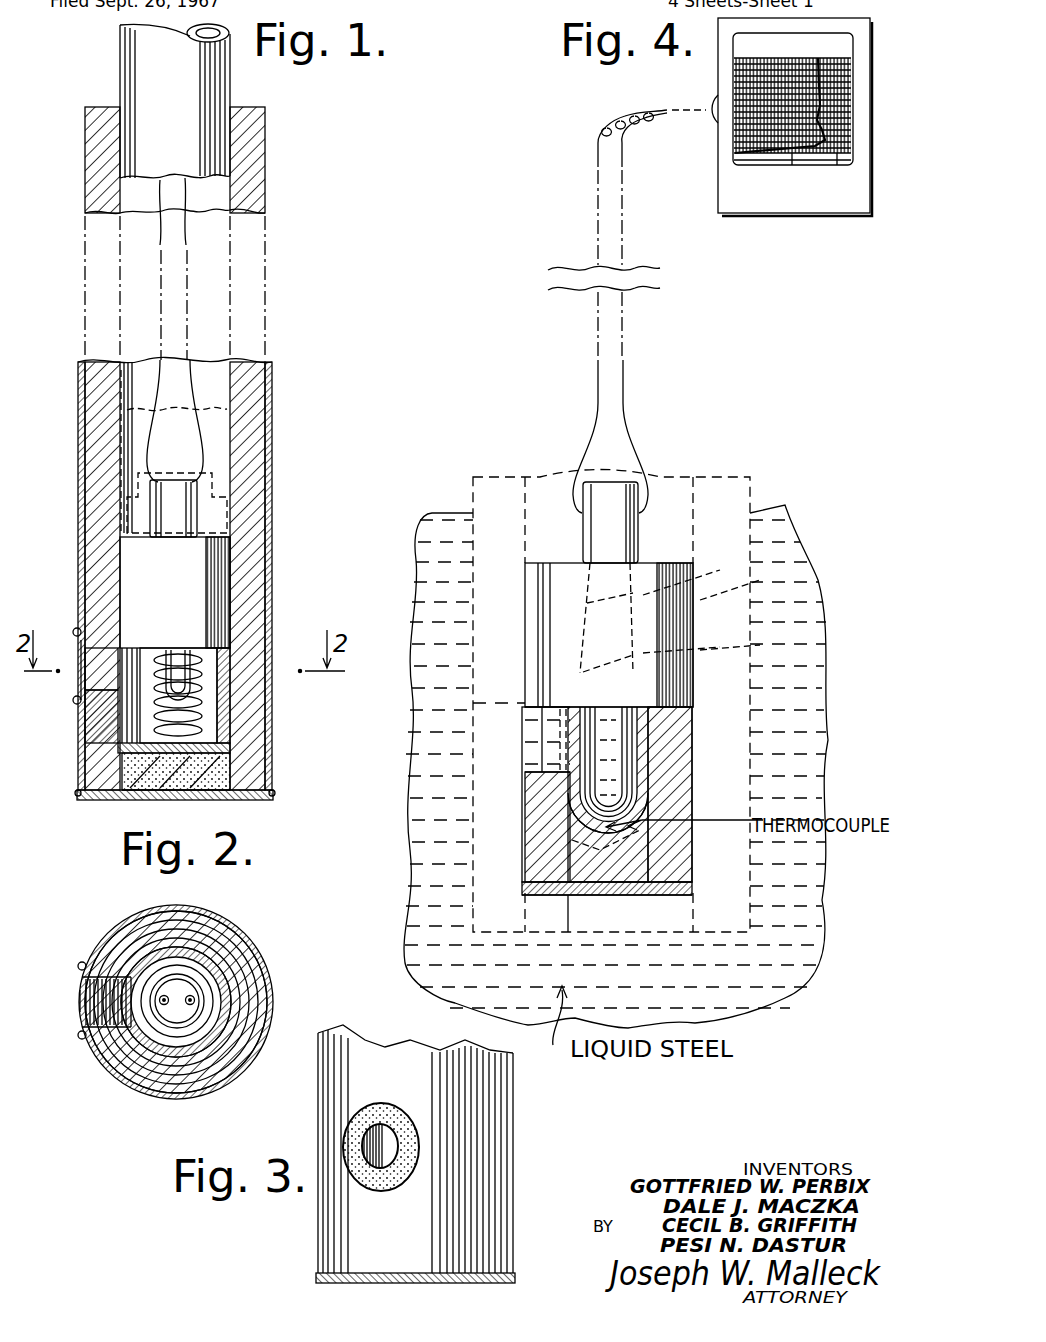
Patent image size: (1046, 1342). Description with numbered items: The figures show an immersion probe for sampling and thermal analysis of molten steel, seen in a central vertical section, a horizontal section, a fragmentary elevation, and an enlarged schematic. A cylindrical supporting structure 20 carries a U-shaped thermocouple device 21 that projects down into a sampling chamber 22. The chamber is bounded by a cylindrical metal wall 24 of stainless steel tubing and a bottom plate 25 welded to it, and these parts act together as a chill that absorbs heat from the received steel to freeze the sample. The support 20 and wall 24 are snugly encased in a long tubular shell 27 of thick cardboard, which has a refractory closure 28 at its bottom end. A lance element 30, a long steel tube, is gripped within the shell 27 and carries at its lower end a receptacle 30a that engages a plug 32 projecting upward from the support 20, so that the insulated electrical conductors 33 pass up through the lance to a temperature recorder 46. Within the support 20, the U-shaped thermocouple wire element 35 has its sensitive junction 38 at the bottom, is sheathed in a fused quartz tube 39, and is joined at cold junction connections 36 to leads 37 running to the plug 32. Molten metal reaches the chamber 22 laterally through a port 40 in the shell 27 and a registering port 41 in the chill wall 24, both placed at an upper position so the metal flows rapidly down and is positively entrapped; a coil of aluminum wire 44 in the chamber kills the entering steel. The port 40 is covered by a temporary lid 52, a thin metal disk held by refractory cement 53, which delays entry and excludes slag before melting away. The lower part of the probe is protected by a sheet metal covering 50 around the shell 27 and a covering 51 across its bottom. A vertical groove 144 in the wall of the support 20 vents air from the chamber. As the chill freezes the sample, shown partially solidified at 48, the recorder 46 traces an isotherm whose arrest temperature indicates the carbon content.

In FIG. 1, the cylindrical supporting structure 20 is at (220, 565).
In FIG. 4, the cylindrical supporting structure 20 is at (683, 617).
In FIG. 1, the U-shaped thermocouple device 21 is at (172, 694).
In FIG. 2, the U-shaped thermocouple device 21 is at (190, 995).
In FIG. 4, the U-shaped thermocouple device 21 is at (656, 765).
In FIG. 1, the sampling chamber 22 is at (210, 723).
In FIG. 2, the sampling chamber 22 is at (214, 1005).
In FIG. 1, the cylindrical metal wall 24 is at (224, 672).
In FIG. 2, the cylindrical metal wall 24 is at (213, 1045).
In FIG. 4, the cylindrical metal wall 24 is at (700, 886).
In FIG. 1, the bottom plate 25 is at (242, 757).
In FIG. 4, the bottom plate 25 is at (600, 895).
In FIG. 1, the tubular shell 27 is at (248, 590).
In FIG. 2, the tubular shell 27 is at (150, 1088).
In FIG. 4, the tubular shell 27 is at (733, 490).
In FIG. 1, the closure 28 is at (134, 790).
In FIG. 1, the lance element 30 is at (120, 60).
In FIG. 1, the receptacle 30a is at (202, 507).
In FIG. 1, the plug 32 is at (162, 512).
In FIG. 4, the plug 32 is at (612, 540).
In FIG. 1, the insulated electrical conductors 33 is at (170, 376).
In FIG. 4, the insulated electrical conductors 33 is at (628, 413).
In FIG. 4, the thermocouple wire element 35 is at (628, 740).
In FIG. 4, the cold junction connections 36 is at (825, 637).
In FIG. 4, the leads 37 is at (812, 560).
In FIG. 4, the sensitive junction 38 is at (573, 840).
In FIG. 4, the fused quartz tube 39 is at (610, 840).
In FIG. 1, the port 40 is at (92, 673).
In FIG. 2, the port 40 is at (102, 1012).
In FIG. 4, the port 40 is at (490, 703).
In FIG. 1, the port 41 is at (90, 722).
In FIG. 2, the port 41 is at (130, 1017).
In FIG. 4, the port 41 is at (527, 757).
In FIG. 1, the coil of aluminum wire 44 is at (216, 746).
In FIG. 2, the coil of aluminum wire 44 is at (208, 988).
In FIG. 4, the temperature recorder 46 is at (786, 203).
In FIG. 4, the partially solidified sample 48 is at (660, 785).
In FIG. 1, the sheet metal covering 50 is at (80, 404).
In FIG. 2, the sheet metal covering 50 is at (110, 1077).
In FIG. 3, the sheet metal covering 50 is at (493, 1122).
In FIG. 1, the sheet metal covering 51 is at (198, 795).
In FIG. 3, the sheet metal covering 51 is at (492, 1279).
In FIG. 1, the temporary lid 52 is at (73, 655).
In FIG. 2, the temporary lid 52 is at (78, 1000).
In FIG. 3, the temporary lid 52 is at (378, 1152).
In FIG. 1, the refractory cement 53 is at (77, 627).
In FIG. 2, the refractory cement 53 is at (78, 966).
In FIG. 3, the refractory cement 53 is at (356, 1129).
In FIG. 1, the vertical groove 144 is at (212, 542).
In FIG. 4, the vertical groove 144 is at (663, 577).